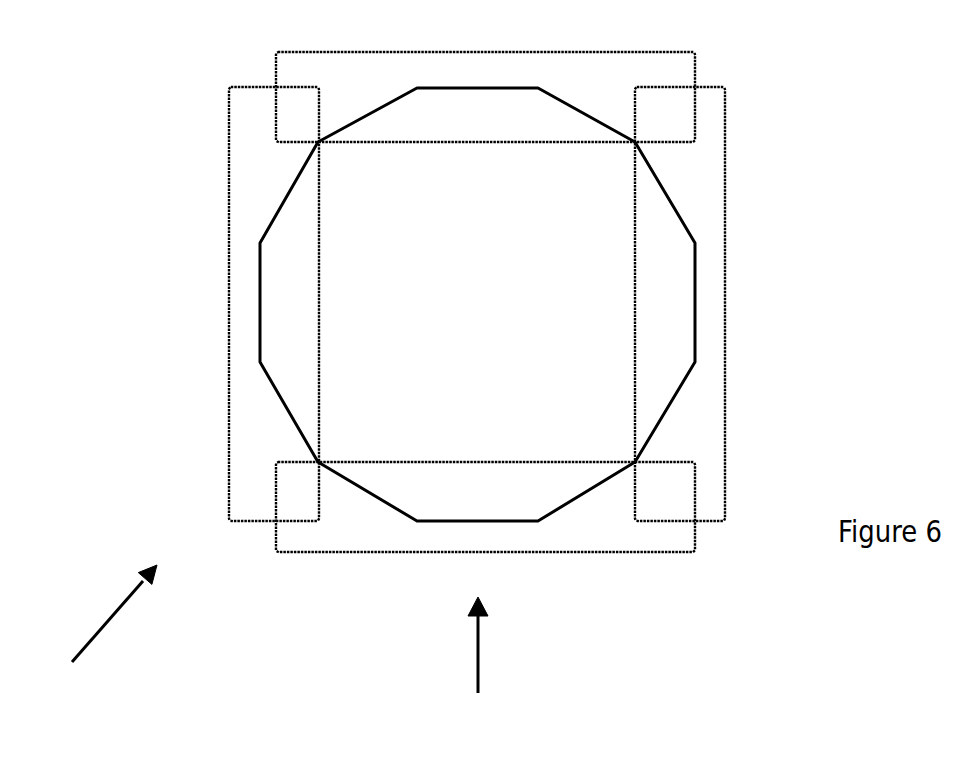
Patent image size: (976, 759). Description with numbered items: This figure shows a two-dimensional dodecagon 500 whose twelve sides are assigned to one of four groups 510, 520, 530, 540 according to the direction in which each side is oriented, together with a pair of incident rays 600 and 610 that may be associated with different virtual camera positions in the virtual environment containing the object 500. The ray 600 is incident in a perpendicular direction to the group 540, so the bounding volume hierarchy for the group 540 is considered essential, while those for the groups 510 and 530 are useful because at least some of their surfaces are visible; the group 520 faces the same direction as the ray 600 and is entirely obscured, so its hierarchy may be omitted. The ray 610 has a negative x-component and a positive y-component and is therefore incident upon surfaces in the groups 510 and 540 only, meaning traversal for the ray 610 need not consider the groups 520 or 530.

The dodecagon 500 is at (73, 543).
The group 510 is at (274, 304).
The group 520 is at (485, 97).
The group 530 is at (680, 304).
The group 540 is at (485, 507).
The incident ray 600 is at (505, 645).
The incident ray 610 is at (122, 613).